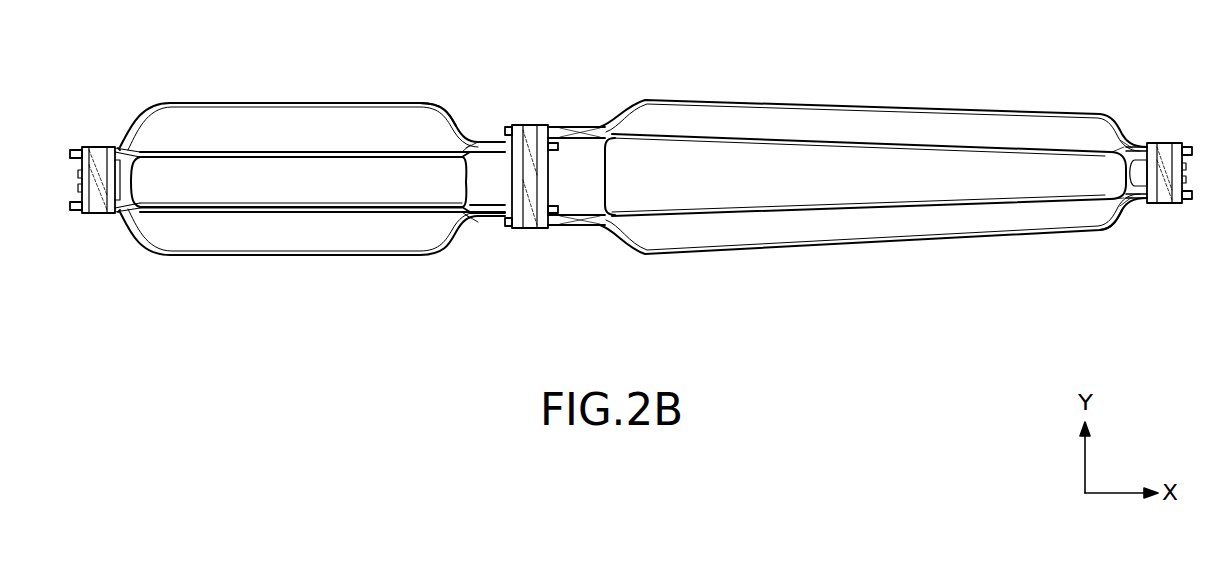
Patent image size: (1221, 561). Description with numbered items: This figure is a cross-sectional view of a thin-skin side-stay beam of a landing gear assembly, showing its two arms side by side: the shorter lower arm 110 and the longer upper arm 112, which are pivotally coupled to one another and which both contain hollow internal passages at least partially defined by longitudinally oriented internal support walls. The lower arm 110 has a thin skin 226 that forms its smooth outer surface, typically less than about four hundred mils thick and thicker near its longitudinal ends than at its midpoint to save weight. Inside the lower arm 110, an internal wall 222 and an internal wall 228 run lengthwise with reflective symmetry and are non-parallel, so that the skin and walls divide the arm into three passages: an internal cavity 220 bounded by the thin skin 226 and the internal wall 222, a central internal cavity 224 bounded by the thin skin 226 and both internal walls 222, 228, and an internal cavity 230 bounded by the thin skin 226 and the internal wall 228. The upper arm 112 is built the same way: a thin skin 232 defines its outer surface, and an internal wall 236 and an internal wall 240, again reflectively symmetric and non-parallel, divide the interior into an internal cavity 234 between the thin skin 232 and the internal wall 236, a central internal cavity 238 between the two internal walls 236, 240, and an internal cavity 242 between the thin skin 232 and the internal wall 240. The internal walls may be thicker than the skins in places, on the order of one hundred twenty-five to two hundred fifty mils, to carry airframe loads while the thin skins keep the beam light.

The lower arm 110 is at (946, 103).
The upper arm 112 is at (283, 103).
The internal cavity 220 is at (1073, 117).
The internal wall 222 is at (800, 138).
The internal cavity 224 is at (1098, 168).
The thin skin 226 is at (1015, 240).
The internal wall 228 is at (900, 210).
The internal cavity 230 is at (1093, 218).
The thin skin 232 is at (368, 103).
The internal cavity 234 is at (432, 118).
The internal wall 236 is at (313, 153).
The internal cavity 238 is at (438, 187).
The internal wall 240 is at (350, 213).
The internal cavity 242 is at (247, 243).